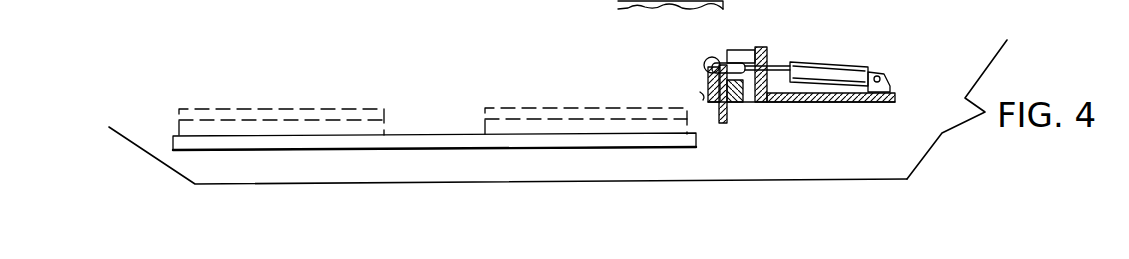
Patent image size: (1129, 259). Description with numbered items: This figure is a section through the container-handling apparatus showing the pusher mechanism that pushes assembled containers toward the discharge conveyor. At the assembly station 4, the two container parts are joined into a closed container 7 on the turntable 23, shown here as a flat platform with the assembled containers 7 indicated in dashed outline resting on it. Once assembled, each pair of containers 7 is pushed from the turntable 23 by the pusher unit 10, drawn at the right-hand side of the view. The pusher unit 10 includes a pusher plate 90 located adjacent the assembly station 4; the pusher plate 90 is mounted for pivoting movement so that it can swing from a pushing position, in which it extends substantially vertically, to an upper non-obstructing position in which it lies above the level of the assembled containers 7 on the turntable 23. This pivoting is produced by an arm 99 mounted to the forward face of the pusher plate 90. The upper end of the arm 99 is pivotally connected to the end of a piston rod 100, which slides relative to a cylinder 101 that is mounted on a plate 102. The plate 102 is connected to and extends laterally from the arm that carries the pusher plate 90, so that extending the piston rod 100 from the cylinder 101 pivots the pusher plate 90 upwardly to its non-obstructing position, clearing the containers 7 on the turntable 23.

The assembly station 4 is at (210, 152).
The closed container 7 is at (236, 109).
The pusher unit 10 is at (810, 54).
The turntable 23 is at (521, 140).
The pusher plate 90 is at (728, 116).
The arm 99 is at (708, 78).
The piston rod 100 is at (776, 58).
The cylinder 101 is at (856, 64).
The plate 102 is at (845, 101).